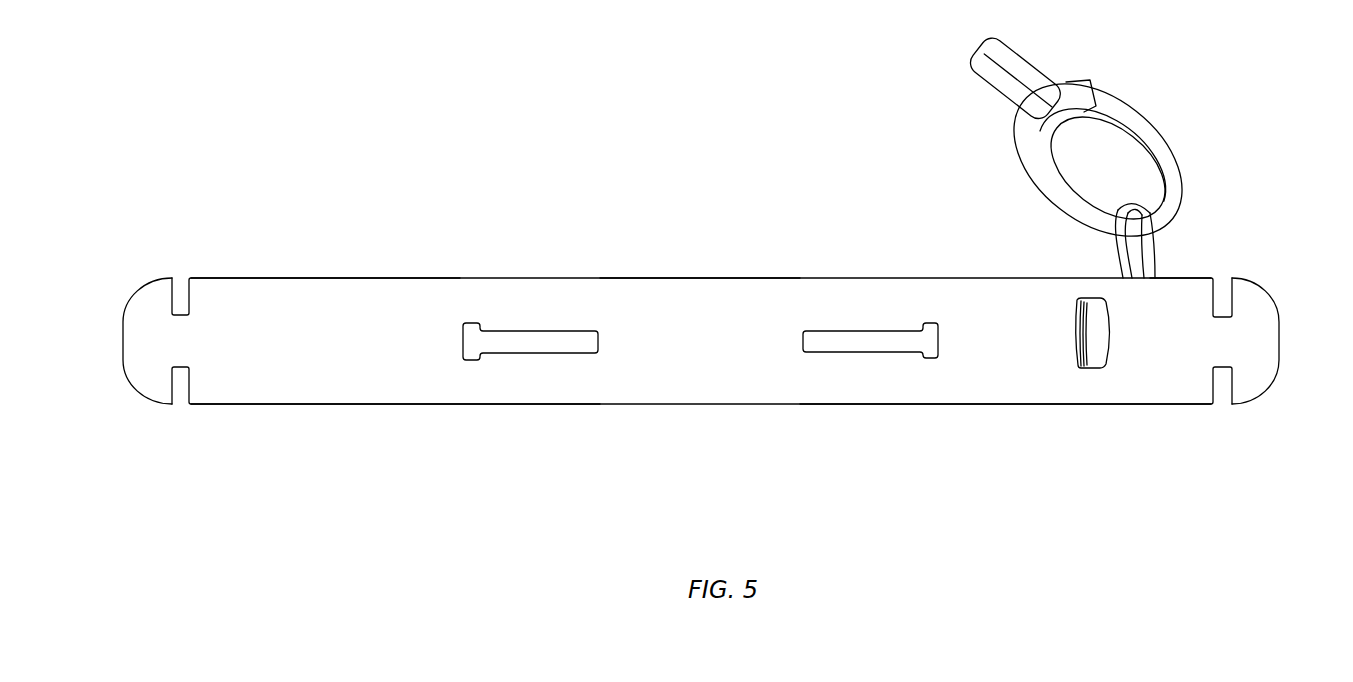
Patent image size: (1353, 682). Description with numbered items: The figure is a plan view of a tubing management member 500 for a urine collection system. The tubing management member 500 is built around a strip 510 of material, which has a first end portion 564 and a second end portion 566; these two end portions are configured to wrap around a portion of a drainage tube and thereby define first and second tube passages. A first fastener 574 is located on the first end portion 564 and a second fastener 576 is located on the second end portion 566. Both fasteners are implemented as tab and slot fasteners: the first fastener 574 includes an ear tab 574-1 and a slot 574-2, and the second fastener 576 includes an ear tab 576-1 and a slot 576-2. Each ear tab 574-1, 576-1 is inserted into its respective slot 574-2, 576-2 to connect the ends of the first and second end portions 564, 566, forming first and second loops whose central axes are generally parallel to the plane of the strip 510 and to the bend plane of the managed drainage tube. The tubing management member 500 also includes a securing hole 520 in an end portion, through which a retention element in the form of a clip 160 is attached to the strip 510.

The tubing management member 500 is at (808, 112).
The clip 160 is at (1142, 104).
The strip 510 is at (727, 404).
The securing hole 520 is at (1077, 308).
The first end portion 564 is at (1187, 277).
The second end portion 566 is at (323, 276).
The first fastener 574 is at (1142, 420).
The ear tab 574-1 is at (1253, 284).
The slot 574-2 is at (891, 353).
The second fastener 576 is at (311, 452).
The ear tab 576-1 is at (135, 293).
The slot 576-2 is at (541, 330).